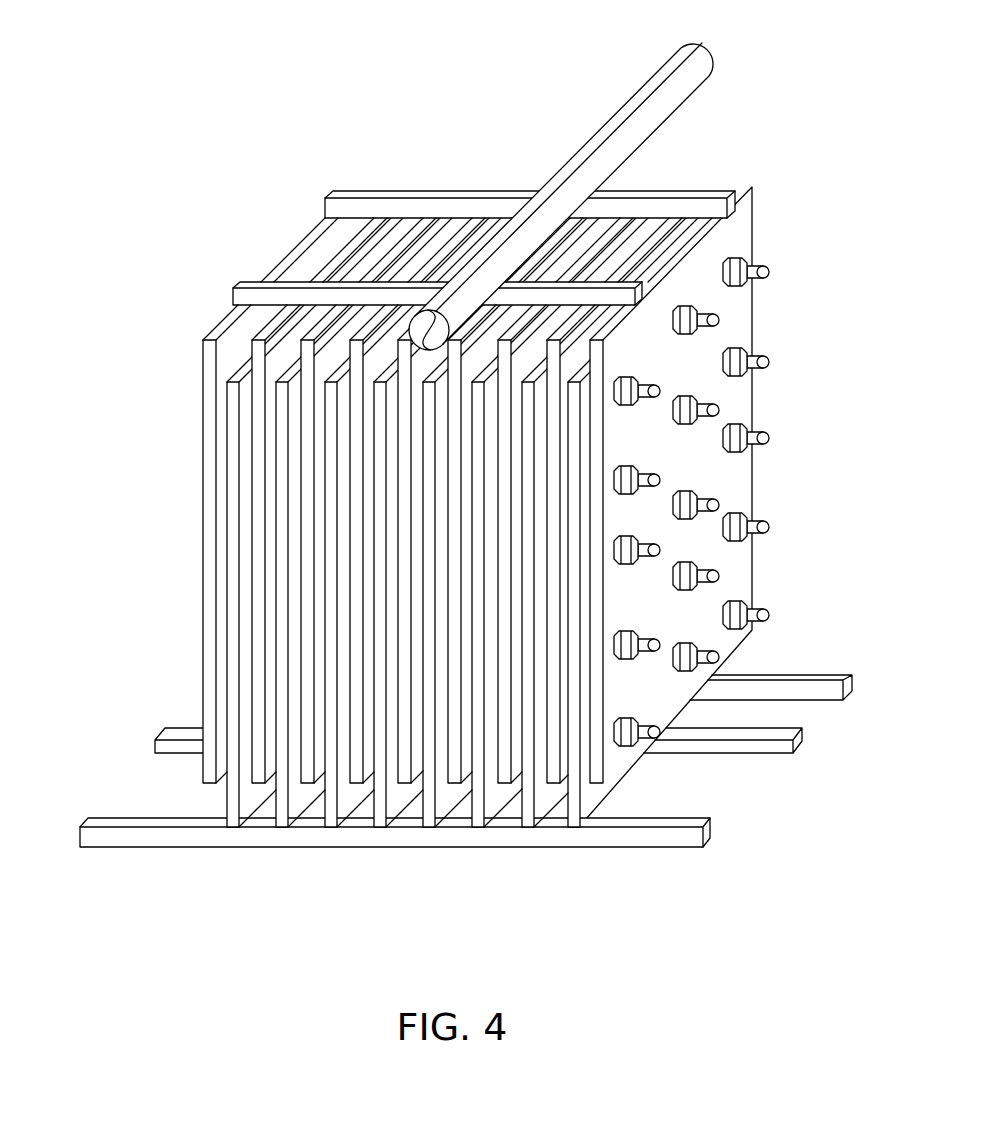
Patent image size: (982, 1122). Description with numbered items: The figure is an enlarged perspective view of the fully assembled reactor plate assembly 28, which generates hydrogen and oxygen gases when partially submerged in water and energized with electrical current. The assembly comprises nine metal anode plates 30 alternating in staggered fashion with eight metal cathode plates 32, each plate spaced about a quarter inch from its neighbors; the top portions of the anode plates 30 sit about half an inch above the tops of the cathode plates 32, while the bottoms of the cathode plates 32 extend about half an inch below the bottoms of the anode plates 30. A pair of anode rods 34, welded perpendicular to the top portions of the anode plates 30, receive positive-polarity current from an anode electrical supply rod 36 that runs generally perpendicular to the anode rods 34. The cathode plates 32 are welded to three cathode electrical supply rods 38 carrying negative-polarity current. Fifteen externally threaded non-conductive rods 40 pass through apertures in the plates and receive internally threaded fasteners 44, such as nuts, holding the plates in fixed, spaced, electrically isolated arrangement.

The reactor plate assembly 28 is at (250, 98).
The anode plates 30 is at (347, 250).
The cathode plates 32 is at (283, 825).
The anode rods 34 is at (242, 287).
The anode electrical supply rod 36 is at (617, 118).
The cathode electrical supply rods 38 is at (760, 732).
The non-conductive rods 40 is at (767, 437).
The threaded fasteners 44 is at (735, 286).